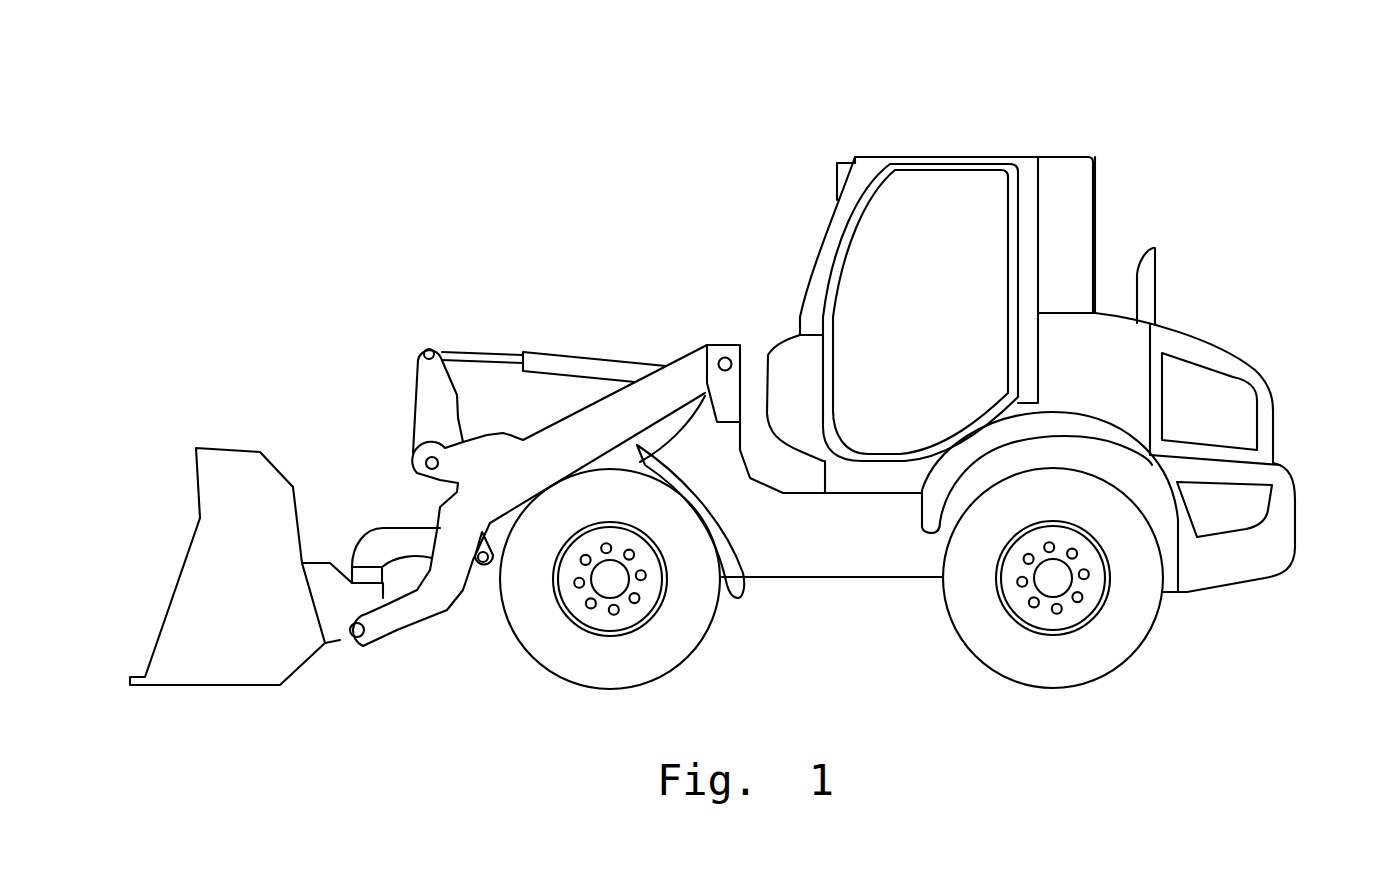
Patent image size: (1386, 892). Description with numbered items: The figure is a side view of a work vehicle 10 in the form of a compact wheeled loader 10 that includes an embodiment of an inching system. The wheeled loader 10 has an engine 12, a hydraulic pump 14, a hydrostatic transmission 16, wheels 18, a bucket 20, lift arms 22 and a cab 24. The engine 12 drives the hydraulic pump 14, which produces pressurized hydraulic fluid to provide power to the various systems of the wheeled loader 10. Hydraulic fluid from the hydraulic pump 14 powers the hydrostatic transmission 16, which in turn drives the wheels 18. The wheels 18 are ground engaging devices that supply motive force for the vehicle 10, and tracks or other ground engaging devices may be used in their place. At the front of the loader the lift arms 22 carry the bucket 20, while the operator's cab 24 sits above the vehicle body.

The work vehicle 10 is at (734, 385).
The engine 12 is at (1218, 358).
The hydraulic pump 14 is at (1297, 457).
The hydrostatic transmission 16 is at (1223, 602).
The wheels 18 is at (692, 657).
The bucket 20 is at (190, 540).
The lift arms 22 is at (398, 403).
The cab 24 is at (948, 148).